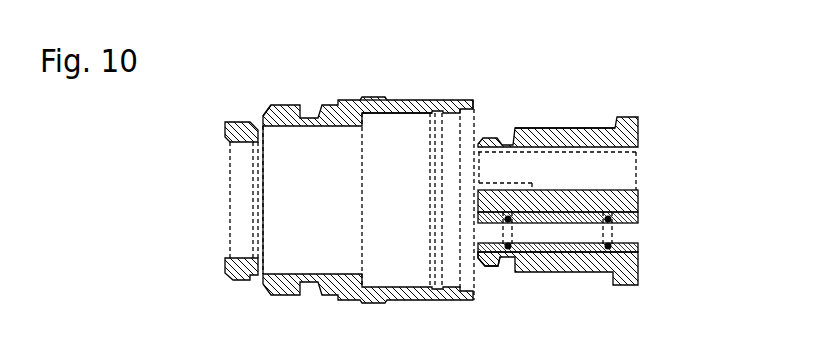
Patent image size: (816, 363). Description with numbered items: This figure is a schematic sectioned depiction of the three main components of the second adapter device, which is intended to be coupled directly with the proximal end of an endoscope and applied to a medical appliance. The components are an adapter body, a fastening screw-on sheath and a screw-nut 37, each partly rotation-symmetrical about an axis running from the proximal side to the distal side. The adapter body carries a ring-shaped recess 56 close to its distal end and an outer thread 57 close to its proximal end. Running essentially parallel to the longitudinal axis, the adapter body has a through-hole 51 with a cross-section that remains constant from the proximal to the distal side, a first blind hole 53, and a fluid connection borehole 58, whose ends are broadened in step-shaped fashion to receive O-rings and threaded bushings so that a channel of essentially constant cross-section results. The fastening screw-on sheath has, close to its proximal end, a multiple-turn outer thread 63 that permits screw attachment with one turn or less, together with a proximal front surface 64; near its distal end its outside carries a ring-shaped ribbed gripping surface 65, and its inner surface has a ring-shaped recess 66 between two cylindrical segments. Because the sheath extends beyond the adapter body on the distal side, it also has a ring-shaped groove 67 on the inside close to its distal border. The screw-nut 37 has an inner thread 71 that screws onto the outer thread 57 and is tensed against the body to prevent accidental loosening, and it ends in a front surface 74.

The screw-nut 37 is at (230, 280).
The through-hole 51 is at (552, 167).
The first blind hole 53 is at (495, 183).
The ring-shaped recess 56 is at (615, 117).
The outer thread 57 is at (487, 267).
The fluid connection borehole 58 is at (553, 235).
The outer thread 63 is at (271, 103).
The proximal front surface 64 is at (258, 122).
The ring-shaped ribbed gripping surface 65 is at (370, 95).
The ring-shaped recess 66 is at (380, 121).
The ring-shaped groove 67 is at (478, 120).
The inner thread 71 is at (230, 257).
The front surface 74 is at (266, 140).